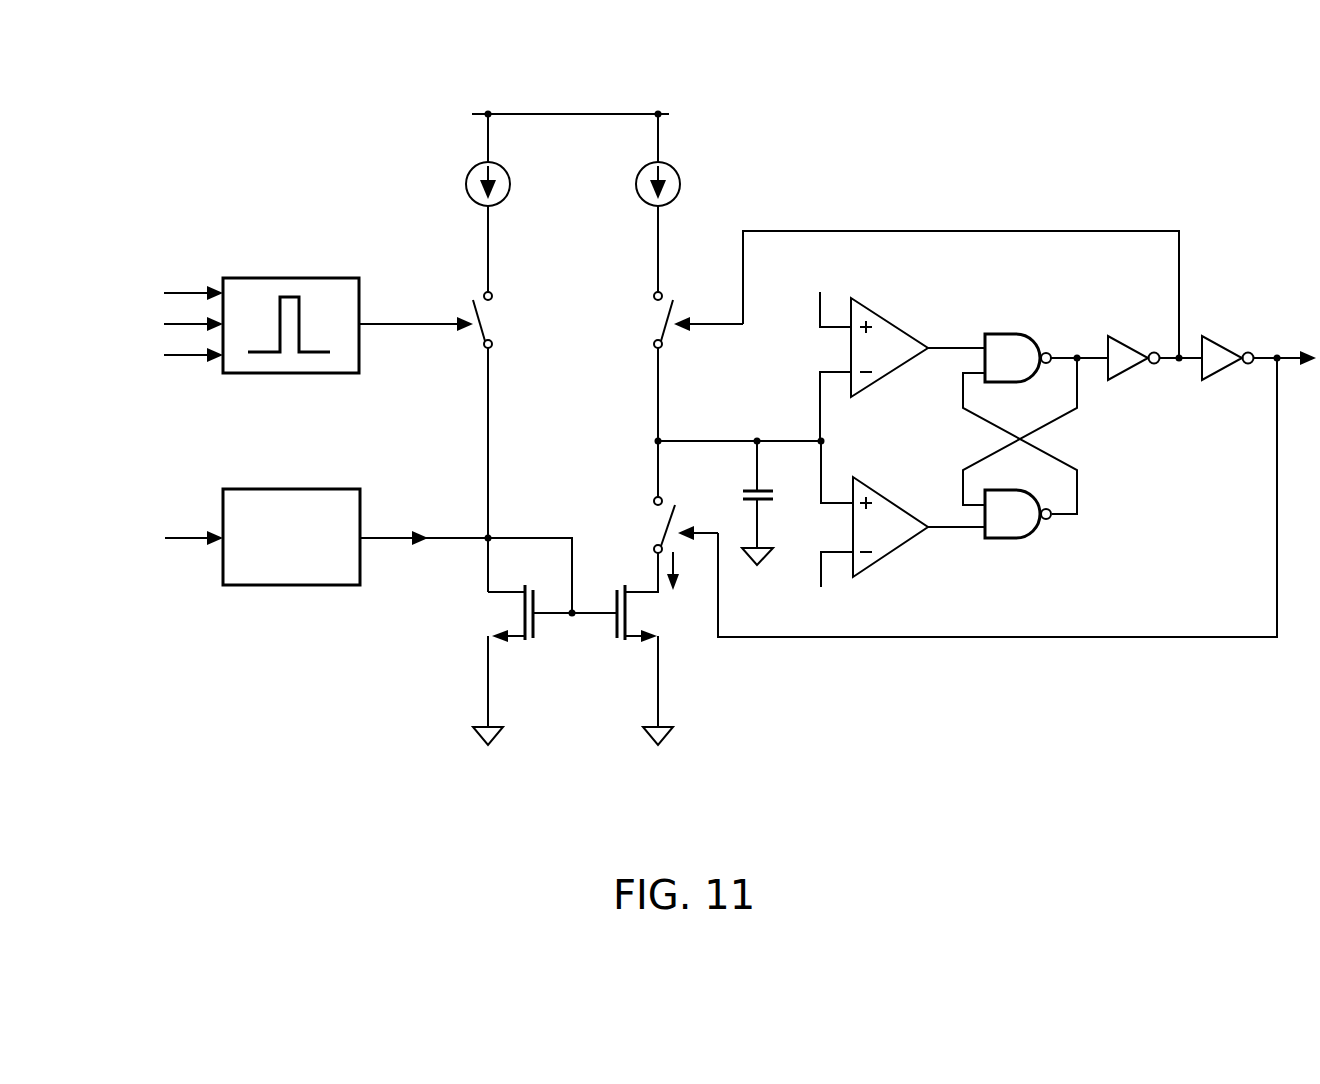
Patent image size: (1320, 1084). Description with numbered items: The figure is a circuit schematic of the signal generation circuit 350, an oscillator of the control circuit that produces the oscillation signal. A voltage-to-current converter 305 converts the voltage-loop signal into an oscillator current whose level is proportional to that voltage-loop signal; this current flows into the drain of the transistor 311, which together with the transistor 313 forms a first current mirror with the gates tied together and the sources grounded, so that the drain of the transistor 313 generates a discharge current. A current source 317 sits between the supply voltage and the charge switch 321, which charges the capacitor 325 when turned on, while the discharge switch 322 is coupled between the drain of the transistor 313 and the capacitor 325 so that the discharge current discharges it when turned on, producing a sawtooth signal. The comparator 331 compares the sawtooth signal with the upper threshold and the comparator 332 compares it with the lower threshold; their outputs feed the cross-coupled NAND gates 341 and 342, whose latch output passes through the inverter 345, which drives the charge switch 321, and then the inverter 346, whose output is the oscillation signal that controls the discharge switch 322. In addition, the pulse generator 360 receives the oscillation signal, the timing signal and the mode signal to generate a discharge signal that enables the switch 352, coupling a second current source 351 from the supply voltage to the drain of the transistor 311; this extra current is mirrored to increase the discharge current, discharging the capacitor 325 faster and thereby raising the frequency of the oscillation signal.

The voltage-to-current converter 305 is at (295, 519).
The transistor 311 is at (507, 665).
The transistor 313 is at (622, 665).
The current source 317 is at (686, 227).
The charge switch 321 is at (894, 364).
The discharge switch 322 is at (943, 497).
The capacitor 325 is at (734, 503).
The comparator 331 is at (894, 351).
The comparator 332 is at (896, 530).
The NAND gate 341 is at (1035, 408).
The NAND gate 342 is at (1020, 465).
The inverter 345 is at (1149, 375).
The inverter 346 is at (1254, 365).
The signal generation circuit 350 is at (1205, 149).
The current source 351 is at (516, 227).
The switch 352 is at (508, 442).
The pulse generator 360 is at (276, 308).